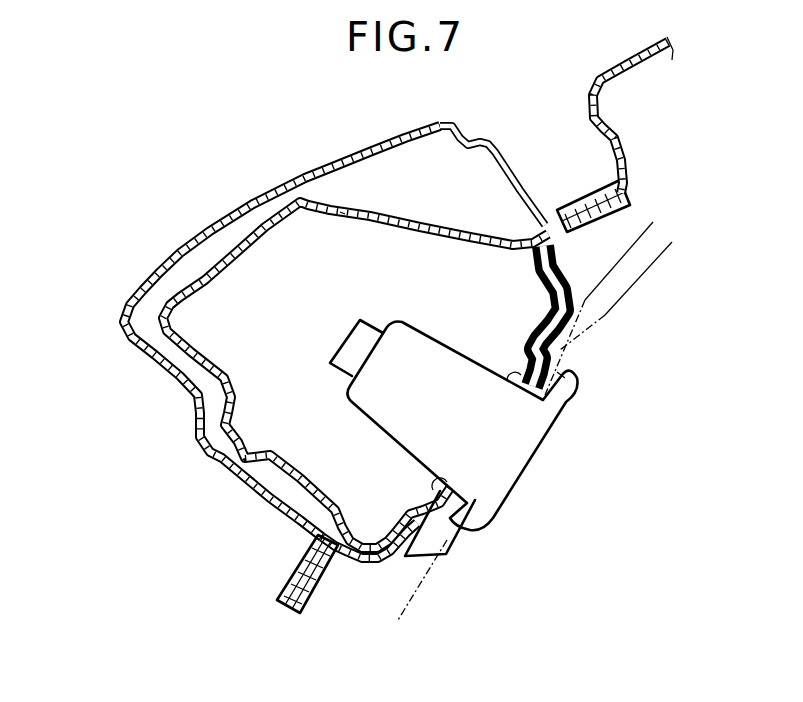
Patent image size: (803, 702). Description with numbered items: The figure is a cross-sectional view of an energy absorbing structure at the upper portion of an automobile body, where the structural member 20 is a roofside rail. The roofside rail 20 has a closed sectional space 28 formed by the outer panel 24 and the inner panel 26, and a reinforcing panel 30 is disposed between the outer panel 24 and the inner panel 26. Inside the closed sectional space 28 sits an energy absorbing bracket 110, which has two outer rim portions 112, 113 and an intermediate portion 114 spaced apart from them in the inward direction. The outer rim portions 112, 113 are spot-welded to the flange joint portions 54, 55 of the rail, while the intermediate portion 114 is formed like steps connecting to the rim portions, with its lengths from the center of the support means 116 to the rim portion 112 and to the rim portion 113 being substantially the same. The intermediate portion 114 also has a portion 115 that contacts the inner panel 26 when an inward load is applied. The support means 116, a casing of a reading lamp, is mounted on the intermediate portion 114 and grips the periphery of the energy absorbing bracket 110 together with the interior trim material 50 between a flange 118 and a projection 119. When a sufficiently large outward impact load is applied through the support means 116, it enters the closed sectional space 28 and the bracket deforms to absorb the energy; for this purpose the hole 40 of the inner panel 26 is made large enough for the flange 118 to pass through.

The structural member 20 is at (233, 185).
The outer panel 24 is at (178, 252).
The inner panel 26 is at (403, 557).
The closed sectional space 28 is at (347, 253).
The reinforcing panel 30 is at (293, 197).
The hole 40 is at (460, 527).
The interior trim material 50 is at (620, 333).
The flange joint portion 54 is at (292, 577).
The flange joint portion 55 is at (590, 230).
The energy absorbing bracket 110 is at (360, 555).
The outer rim portion 112 is at (320, 592).
The outer rim portion 113 is at (607, 313).
The intermediate portion 114 is at (493, 520).
The portion to be brought into contact with the inner panel 115 is at (490, 545).
The support means 116 is at (513, 440).
The flange 118 is at (570, 400).
The projection 119 is at (517, 372).